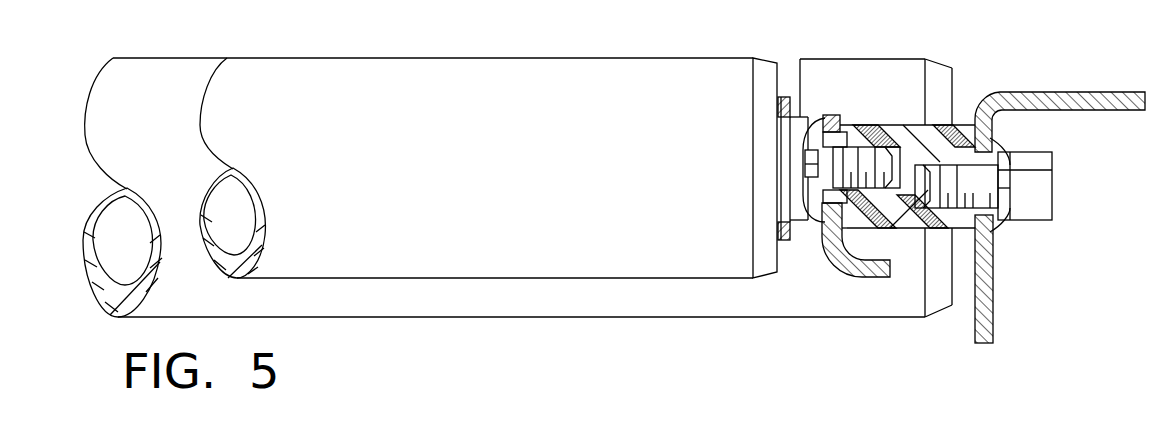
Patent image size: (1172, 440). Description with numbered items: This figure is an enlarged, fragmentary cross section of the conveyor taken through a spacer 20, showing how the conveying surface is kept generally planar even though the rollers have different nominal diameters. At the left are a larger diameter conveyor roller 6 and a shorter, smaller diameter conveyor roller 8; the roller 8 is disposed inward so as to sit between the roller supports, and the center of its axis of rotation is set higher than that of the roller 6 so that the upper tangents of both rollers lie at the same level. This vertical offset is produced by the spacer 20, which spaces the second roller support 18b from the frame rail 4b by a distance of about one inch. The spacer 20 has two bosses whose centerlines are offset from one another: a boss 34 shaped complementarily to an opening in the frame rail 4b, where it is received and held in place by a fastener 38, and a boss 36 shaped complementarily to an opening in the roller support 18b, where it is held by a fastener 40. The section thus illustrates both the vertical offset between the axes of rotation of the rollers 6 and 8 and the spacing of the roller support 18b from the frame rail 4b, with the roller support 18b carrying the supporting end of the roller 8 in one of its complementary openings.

The conveyor roller 6 is at (157, 114).
The conveyor roller 8 is at (476, 183).
The fastener 40 is at (817, 132).
The boss 36 is at (831, 124).
The spacer 20 is at (962, 127).
The frame rail 4b is at (1062, 93).
The fastener 38 is at (1000, 152).
The boss 34 is at (975, 212).
The second roller support 18b is at (866, 268).